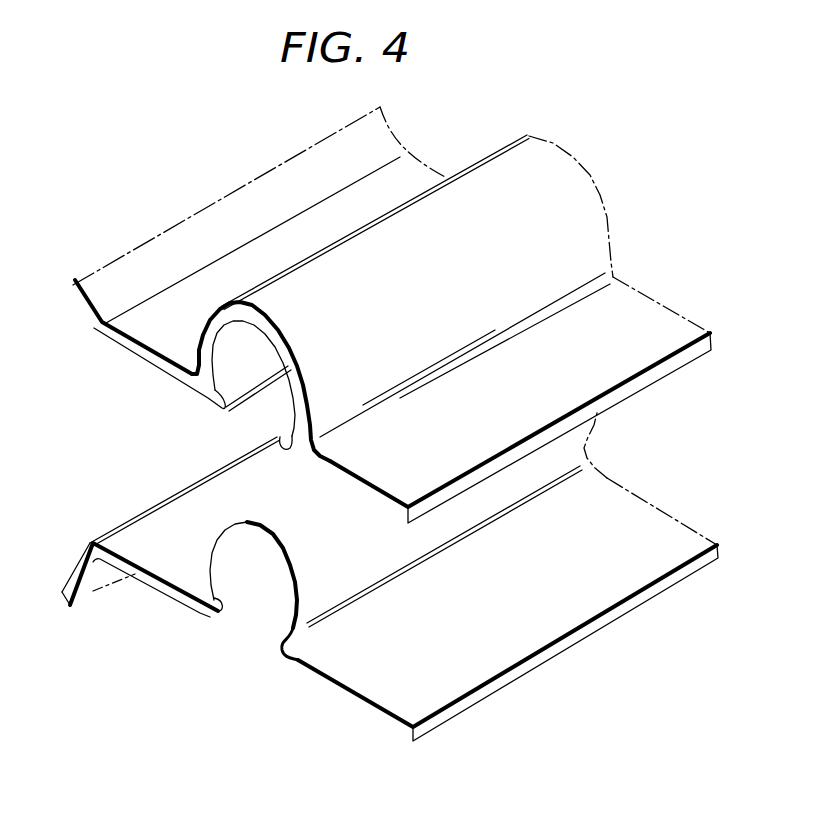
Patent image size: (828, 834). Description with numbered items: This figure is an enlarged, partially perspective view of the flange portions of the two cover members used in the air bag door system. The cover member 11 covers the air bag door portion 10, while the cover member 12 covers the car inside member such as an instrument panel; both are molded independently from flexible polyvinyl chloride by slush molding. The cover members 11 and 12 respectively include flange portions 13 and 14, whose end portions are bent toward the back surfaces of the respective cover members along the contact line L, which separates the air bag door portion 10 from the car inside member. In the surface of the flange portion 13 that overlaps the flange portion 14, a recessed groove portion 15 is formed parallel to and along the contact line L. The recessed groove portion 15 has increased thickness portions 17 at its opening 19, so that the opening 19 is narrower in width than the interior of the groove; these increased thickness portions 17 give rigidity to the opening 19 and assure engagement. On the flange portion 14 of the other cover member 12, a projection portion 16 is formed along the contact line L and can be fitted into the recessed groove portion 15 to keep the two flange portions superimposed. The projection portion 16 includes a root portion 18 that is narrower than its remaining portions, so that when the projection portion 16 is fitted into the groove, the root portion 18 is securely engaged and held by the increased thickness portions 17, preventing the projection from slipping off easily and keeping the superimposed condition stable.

The air bag door portion 10 is at (592, 164).
The cover member 11 is at (290, 158).
The cover member 12 is at (181, 605).
The flange portion 13 is at (647, 316).
The flange portion 14 is at (655, 532).
The recessed groove portion 15 is at (300, 277).
The projection portion 16 is at (253, 587).
The increased thickness portion 17 is at (212, 395).
The root portion 18 is at (300, 648).
The opening 19 is at (262, 412).
The contact line L is at (93, 333).